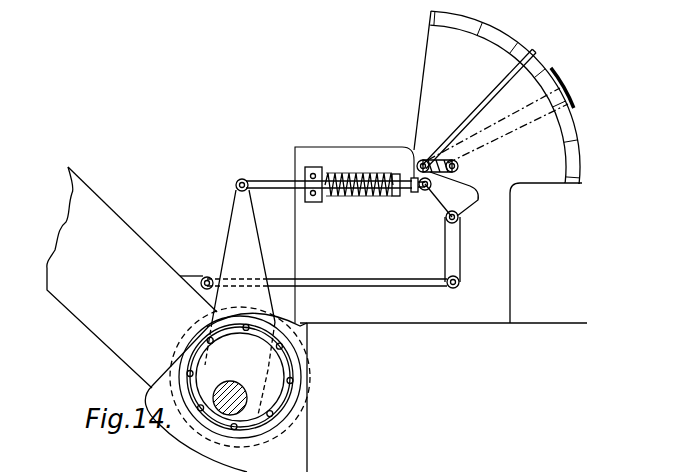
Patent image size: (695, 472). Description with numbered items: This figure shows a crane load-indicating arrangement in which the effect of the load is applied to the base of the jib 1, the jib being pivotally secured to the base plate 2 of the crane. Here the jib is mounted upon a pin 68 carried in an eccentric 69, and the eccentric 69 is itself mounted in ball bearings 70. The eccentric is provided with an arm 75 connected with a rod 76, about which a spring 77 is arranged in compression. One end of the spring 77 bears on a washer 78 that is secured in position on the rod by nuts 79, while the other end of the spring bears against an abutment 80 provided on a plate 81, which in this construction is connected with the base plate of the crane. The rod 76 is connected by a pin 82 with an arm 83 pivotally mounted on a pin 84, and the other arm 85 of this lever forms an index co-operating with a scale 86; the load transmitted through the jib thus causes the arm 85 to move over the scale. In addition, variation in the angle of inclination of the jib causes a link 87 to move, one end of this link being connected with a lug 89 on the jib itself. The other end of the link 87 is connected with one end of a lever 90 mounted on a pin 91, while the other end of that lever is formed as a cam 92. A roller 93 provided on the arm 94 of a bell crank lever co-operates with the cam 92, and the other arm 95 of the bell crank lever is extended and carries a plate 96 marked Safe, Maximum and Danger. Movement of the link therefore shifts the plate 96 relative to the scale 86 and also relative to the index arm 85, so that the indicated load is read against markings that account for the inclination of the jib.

The jib 1 is at (73, 296).
The base plate 2 is at (546, 333).
The pin 68 is at (240, 397).
The eccentric 69 is at (254, 413).
The ball bearings 70 is at (293, 364).
The arm 75 is at (232, 229).
The rod 76 is at (355, 176).
The spring 77 is at (327, 172).
The washer 78 is at (386, 180).
The nuts 79 is at (413, 180).
The abutment 80 is at (306, 176).
The plate 81 is at (518, 163).
The pin 82 is at (423, 188).
The arm 83 is at (466, 200).
The pin 84 is at (422, 162).
The arm 85 is at (517, 57).
The scale 86 is at (567, 124).
The link 87 is at (393, 280).
The lug 89 is at (206, 279).
The lever 90 is at (458, 256).
The pin 91 is at (458, 218).
The cam 92 is at (468, 184).
The roller 93 is at (462, 165).
The arm 94 is at (424, 160).
The arm 95 is at (537, 112).
The plate 96 is at (560, 72).